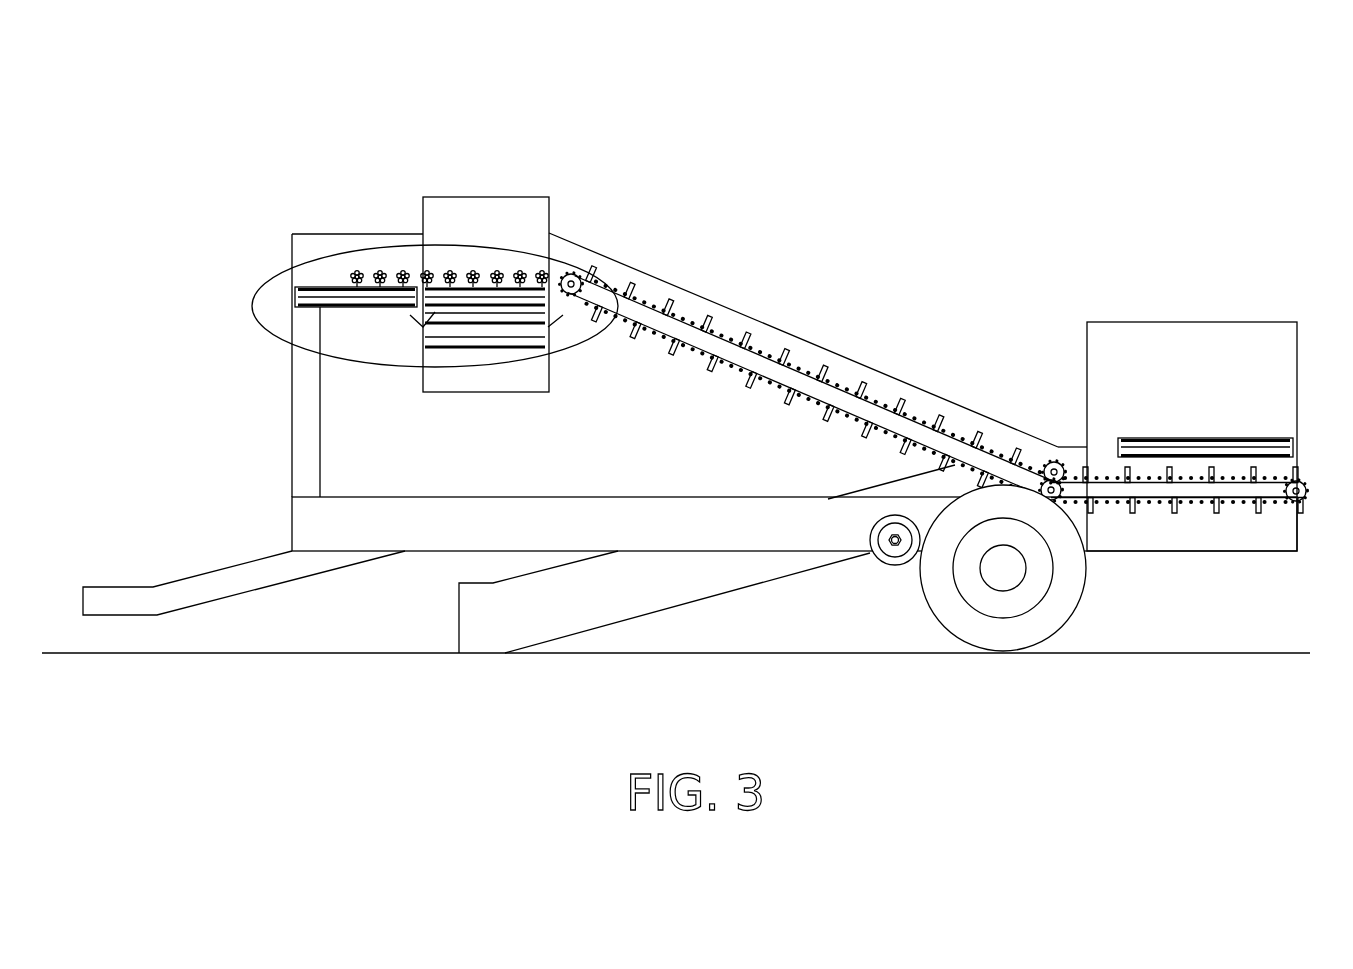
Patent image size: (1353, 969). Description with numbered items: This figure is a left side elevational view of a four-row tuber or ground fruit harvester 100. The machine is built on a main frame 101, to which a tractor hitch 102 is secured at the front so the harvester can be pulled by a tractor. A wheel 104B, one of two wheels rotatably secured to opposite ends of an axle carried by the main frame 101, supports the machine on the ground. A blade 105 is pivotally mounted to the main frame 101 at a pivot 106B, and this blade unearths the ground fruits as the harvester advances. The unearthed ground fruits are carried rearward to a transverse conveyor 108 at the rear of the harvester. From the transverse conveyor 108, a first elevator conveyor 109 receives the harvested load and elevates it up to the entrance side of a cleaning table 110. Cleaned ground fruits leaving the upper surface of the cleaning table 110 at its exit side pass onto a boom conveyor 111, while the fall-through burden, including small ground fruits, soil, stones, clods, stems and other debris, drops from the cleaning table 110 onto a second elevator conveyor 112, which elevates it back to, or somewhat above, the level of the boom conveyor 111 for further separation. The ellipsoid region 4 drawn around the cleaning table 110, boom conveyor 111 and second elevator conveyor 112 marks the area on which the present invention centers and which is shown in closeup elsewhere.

The ground fruit harvester 100 is at (277, 168).
The ellipsoid region 4 is at (262, 332).
The main frame 101 is at (307, 521).
The tractor hitch 102 is at (120, 600).
The wheel 104B is at (950, 607).
The blade 105 is at (482, 632).
The pivot 106B is at (895, 553).
The transverse conveyor 108 is at (1248, 445).
The first elevator conveyor 109 is at (798, 357).
The cleaning table 110 is at (507, 264).
The boom conveyor 111 is at (295, 297).
The second elevator conveyor 112 is at (423, 327).